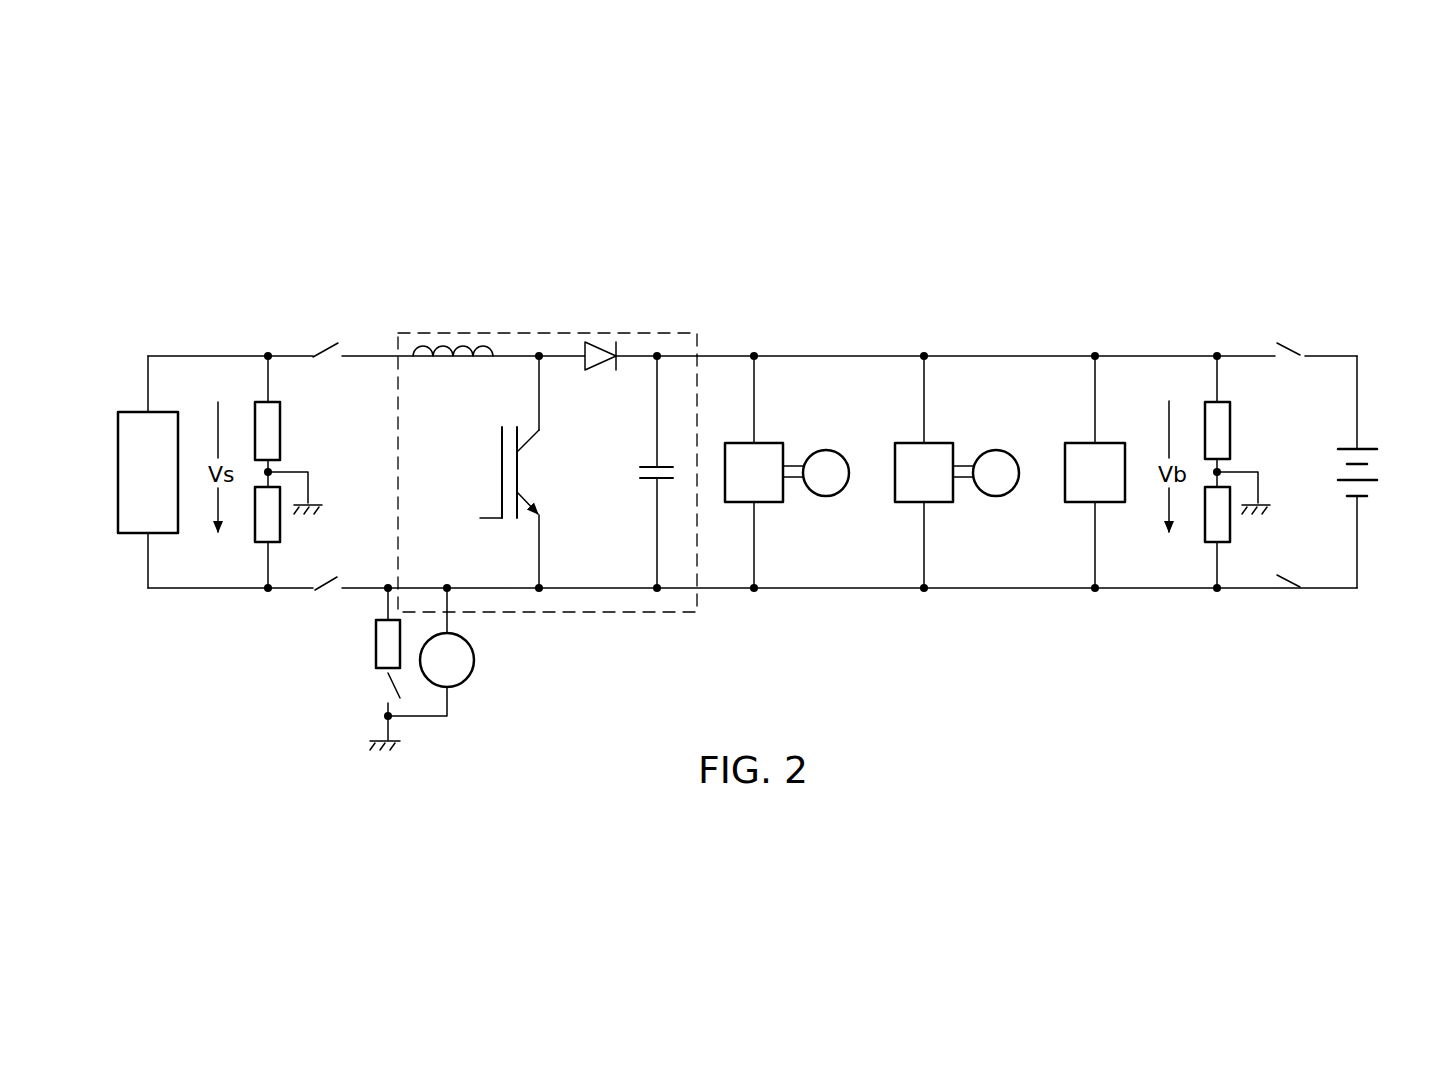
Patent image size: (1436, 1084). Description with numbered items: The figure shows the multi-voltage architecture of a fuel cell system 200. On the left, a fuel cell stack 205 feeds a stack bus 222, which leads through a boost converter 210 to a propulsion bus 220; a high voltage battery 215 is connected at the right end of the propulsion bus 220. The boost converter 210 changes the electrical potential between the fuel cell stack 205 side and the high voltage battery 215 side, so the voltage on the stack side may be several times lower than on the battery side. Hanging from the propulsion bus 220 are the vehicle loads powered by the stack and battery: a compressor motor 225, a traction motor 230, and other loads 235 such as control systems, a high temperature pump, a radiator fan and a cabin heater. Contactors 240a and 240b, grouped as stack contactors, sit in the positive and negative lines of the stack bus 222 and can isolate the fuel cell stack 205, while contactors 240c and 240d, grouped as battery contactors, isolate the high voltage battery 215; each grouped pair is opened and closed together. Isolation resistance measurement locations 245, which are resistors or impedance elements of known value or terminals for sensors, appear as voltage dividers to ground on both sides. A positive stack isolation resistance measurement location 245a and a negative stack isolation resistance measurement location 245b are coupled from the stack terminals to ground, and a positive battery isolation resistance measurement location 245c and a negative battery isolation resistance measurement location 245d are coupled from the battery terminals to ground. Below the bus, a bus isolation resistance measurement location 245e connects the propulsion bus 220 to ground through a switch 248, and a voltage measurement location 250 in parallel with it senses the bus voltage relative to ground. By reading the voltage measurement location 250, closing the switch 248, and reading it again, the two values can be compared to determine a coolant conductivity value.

The fuel cell system 200 is at (1012, 256).
The fuel cell stack 205 is at (120, 410).
The boost converter 210 is at (548, 333).
The high voltage battery 215 is at (1375, 438).
The propulsion bus 220 is at (834, 355).
The stack bus 222 is at (222, 355).
The compressor motor 225 is at (807, 440).
The traction motor 230 is at (977, 440).
The other loads 235 is at (1075, 443).
The contactor 240a is at (349, 342).
The contactor 240b is at (323, 598).
The contactor 240c is at (1270, 342).
The contactor 240d is at (1292, 597).
The isolation resistance measurement locations 245 is at (318, 428).
The positive stack isolation resistance measurement location 245a is at (281, 447).
The negative stack isolation resistance measurement location 245b is at (281, 540).
The positive battery isolation resistance measurement location 245c is at (1231, 447).
The negative battery isolation resistance measurement location 245d is at (1231, 540).
The bus isolation resistance measurement location 245e is at (376, 655).
The switch 248 is at (386, 697).
The voltage measurement location 250 is at (474, 660).